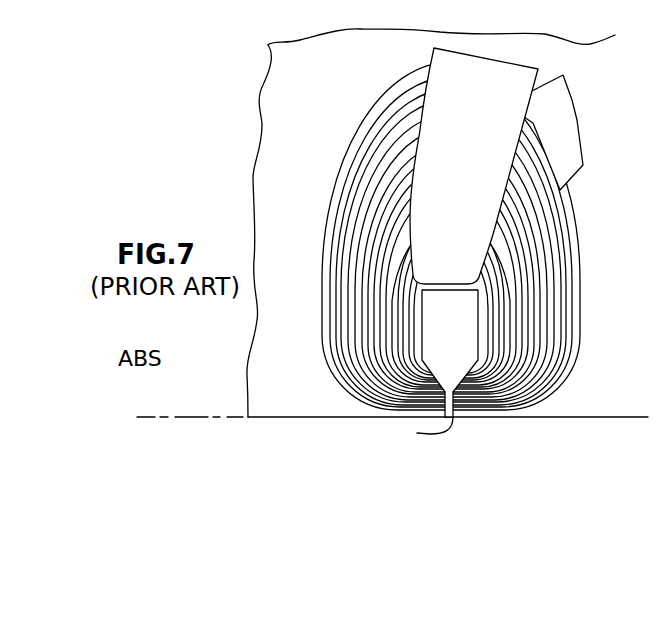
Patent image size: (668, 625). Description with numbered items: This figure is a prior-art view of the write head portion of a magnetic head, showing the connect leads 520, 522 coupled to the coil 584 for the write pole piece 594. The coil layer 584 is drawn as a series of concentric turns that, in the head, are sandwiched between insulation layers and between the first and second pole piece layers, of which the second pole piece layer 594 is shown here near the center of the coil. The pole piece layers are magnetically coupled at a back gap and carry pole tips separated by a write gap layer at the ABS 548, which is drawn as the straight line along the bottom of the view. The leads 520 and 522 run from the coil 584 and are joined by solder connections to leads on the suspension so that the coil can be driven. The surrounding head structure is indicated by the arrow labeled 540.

The connect lead 520 is at (482, 165).
The connect lead 522 is at (577, 120).
The write head 540 is at (494, 241).
The ABS 548 is at (189, 415).
The coil layer 584 is at (556, 314).
The second pole piece layer 594 is at (466, 344).